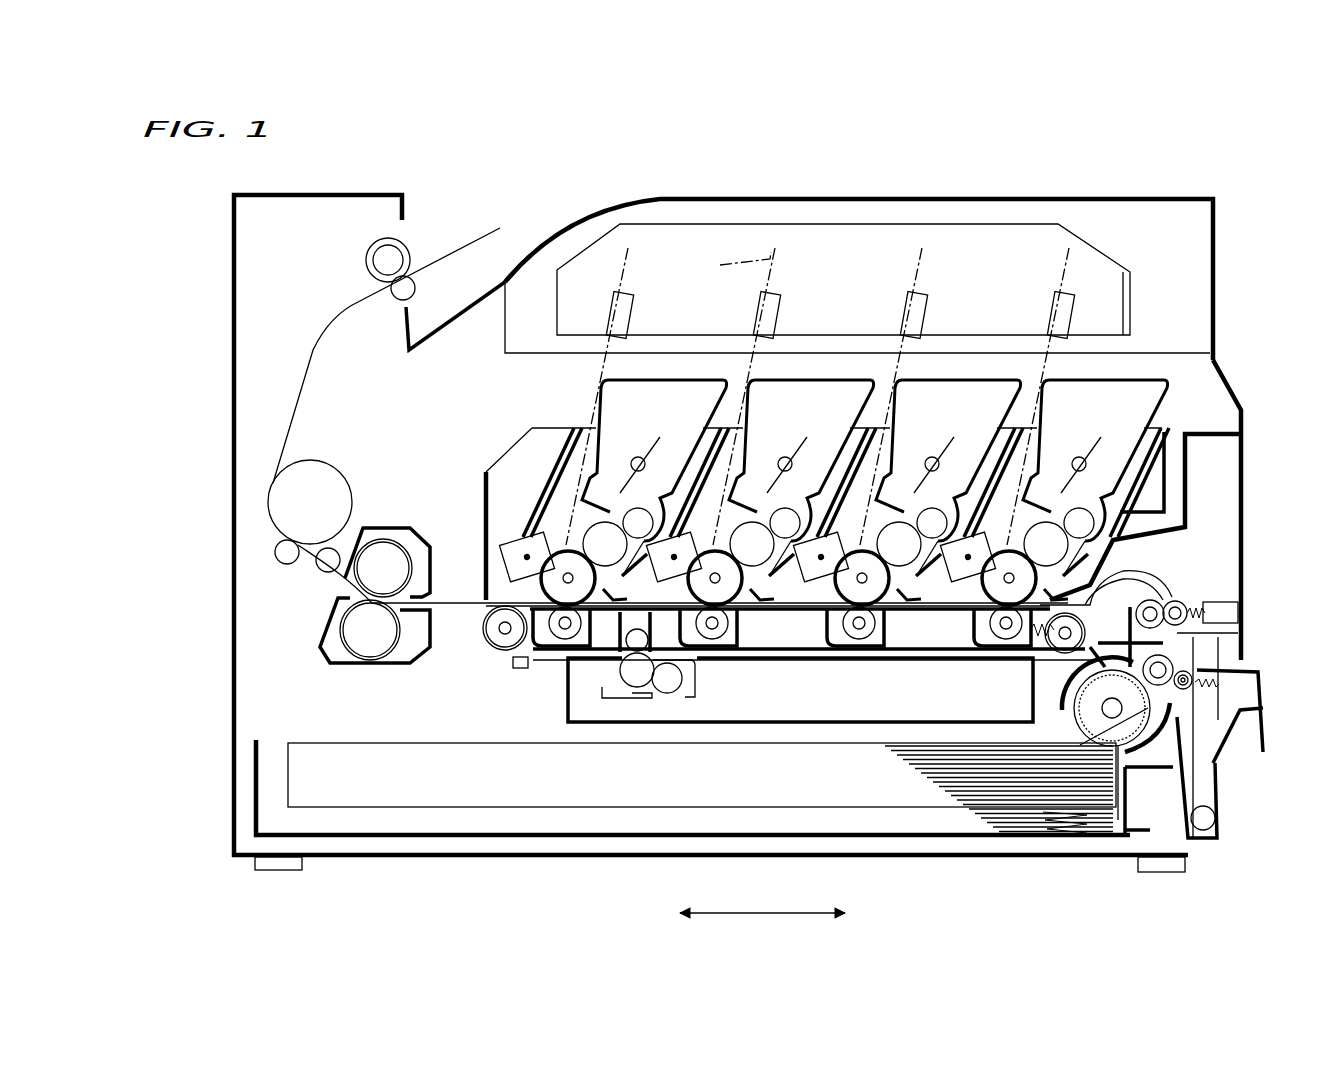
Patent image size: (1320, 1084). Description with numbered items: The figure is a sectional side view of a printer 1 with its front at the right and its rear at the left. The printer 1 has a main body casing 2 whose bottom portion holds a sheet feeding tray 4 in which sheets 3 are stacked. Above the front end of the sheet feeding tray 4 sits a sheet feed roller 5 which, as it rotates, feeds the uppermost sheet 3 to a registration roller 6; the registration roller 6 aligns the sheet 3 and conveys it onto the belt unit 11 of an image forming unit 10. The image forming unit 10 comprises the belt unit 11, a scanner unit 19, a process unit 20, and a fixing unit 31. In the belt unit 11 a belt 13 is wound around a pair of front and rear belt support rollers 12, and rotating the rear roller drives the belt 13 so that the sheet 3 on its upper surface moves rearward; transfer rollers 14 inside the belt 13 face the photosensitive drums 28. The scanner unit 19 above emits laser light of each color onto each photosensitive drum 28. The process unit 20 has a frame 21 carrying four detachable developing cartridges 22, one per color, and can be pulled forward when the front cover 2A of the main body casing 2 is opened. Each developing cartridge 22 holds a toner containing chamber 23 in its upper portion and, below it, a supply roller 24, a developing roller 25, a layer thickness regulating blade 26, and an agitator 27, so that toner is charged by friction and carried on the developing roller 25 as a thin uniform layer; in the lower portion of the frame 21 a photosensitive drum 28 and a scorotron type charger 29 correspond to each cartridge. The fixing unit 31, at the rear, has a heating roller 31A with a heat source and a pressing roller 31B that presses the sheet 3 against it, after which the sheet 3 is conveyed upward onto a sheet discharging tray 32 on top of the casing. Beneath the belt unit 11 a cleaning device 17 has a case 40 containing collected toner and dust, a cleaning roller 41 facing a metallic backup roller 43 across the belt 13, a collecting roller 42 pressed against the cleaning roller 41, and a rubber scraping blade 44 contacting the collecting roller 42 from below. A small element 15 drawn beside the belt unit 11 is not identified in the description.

The printer 1 is at (840, 176).
The main body casing 2 is at (348, 195).
The front cover 2A is at (1245, 492).
The sheet 3 is at (985, 790).
The sheet feeding tray 4 is at (483, 835).
The sheet feed roller 5 is at (1112, 736).
The registration roller 6 is at (1153, 604).
The image forming unit 10 is at (456, 447).
The belt unit 11 is at (552, 657).
The belt support rollers 12 is at (484, 628).
The belt 13 is at (543, 652).
The transfer rollers 14 is at (864, 630).
The sensor 15 is at (513, 662).
The cleaning device 17 is at (702, 726).
The scanner unit 19 is at (947, 225).
The process unit 20 is at (516, 440).
The frame 21 is at (483, 486).
The developing cartridge 22 is at (662, 372).
The toner containing chamber 23 is at (923, 385).
The supply roller 24 is at (932, 510).
The developing roller 25 is at (906, 556).
The layer thickness regulating blade 26 is at (910, 495).
The agitator 27 is at (948, 446).
The photosensitive drum 28 is at (878, 592).
The scorotron type charger 29 is at (847, 595).
The fixing unit 31 is at (388, 527).
The heating roller 31A is at (402, 566).
The pressing roller 31B is at (370, 648).
The sheet discharging tray 32 is at (757, 195).
The case 40 is at (755, 723).
The cleaning roller 41 is at (627, 673).
The collecting roller 42 is at (676, 678).
The backup roller 43 is at (628, 641).
The scraping blade 44 is at (652, 696).